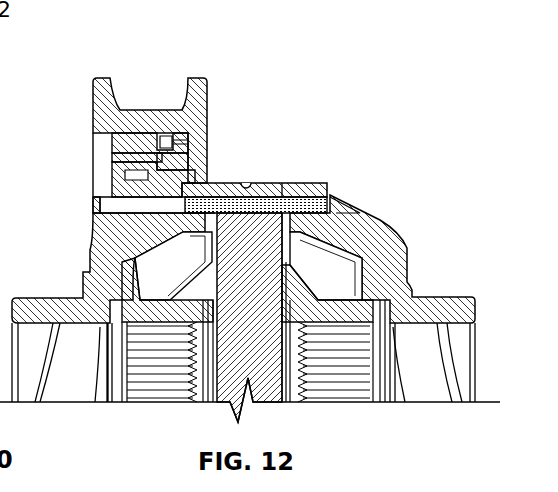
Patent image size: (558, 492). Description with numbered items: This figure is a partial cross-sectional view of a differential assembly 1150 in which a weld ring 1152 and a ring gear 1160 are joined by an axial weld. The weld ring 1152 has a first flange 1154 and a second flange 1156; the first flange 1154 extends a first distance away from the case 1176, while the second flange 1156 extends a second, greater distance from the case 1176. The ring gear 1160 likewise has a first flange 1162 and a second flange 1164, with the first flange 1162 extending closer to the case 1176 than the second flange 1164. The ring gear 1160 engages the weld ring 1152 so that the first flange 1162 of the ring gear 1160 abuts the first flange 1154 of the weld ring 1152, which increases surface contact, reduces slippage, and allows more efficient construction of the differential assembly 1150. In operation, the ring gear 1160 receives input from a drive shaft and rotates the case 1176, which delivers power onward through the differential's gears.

The differential assembly 1150 is at (307, 84).
The weld ring 1152 is at (123, 172).
The first flange 1154 is at (160, 154).
The second flange 1156 is at (187, 157).
The ring gear 1160 is at (133, 97).
The first flange 1162 is at (133, 140).
The second flange 1164 is at (180, 128).
The case 1176 is at (393, 262).